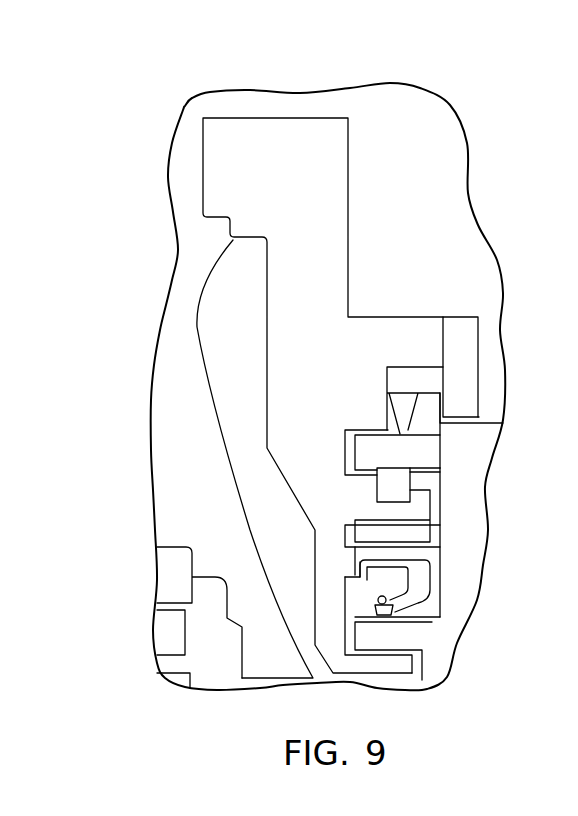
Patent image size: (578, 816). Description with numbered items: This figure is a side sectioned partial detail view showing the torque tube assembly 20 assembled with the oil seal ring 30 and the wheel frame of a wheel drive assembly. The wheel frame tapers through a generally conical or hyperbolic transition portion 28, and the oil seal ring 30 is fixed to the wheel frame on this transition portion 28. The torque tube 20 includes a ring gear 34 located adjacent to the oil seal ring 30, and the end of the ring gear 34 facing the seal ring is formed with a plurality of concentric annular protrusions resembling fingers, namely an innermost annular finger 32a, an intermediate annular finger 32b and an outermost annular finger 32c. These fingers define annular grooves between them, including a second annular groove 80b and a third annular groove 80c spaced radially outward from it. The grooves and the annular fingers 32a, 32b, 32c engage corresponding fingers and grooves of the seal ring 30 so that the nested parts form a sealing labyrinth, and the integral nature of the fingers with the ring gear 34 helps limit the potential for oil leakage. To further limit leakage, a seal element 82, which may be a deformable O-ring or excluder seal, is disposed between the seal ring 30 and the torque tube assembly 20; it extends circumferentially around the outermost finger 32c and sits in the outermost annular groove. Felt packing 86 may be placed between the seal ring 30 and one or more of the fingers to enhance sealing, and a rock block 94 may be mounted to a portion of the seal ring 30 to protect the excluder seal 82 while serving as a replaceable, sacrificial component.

The torque tube 20 is at (472, 500).
The transition portion 28 is at (180, 302).
The oil seal ring 30 is at (262, 130).
The innermost annular finger 32a is at (387, 637).
The intermediate annular finger 32b is at (380, 533).
The outermost annular finger 32c is at (372, 452).
The ring gear 34 is at (513, 404).
The second annular groove 80b is at (448, 570).
The third annular groove 80c is at (463, 459).
The seal element 82 is at (422, 403).
The felt packing 86 is at (393, 488).
The rock block 94 is at (467, 332).